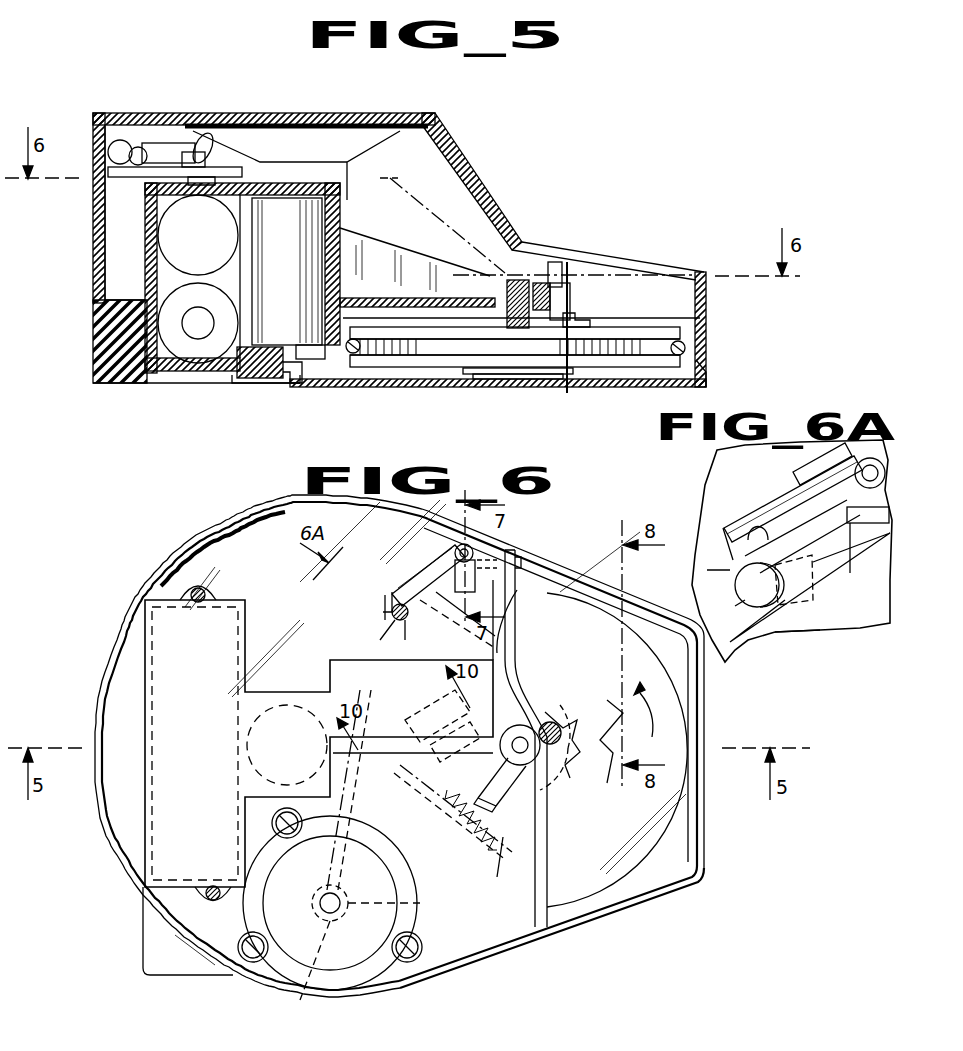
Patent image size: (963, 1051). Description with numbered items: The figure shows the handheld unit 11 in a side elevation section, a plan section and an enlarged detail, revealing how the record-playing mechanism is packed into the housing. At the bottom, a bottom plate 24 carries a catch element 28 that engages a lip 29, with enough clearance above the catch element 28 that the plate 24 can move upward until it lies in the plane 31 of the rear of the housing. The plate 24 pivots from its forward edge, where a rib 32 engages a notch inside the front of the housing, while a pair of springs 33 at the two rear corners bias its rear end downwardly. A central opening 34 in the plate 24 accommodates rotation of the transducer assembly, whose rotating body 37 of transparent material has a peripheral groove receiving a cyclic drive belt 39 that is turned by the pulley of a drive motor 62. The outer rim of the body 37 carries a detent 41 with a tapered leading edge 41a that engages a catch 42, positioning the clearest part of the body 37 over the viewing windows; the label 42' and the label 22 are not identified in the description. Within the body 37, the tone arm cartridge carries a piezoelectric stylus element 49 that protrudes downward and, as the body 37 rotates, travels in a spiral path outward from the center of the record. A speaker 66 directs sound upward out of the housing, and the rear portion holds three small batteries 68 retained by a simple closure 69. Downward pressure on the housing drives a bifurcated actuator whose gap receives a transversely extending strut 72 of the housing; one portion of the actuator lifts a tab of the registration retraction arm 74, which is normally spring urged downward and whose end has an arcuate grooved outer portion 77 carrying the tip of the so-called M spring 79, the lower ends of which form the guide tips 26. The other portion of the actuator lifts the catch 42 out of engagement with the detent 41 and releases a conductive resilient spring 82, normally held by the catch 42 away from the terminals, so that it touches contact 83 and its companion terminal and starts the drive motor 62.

In FIG. 6, the handheld unit 11 is at (136, 572).
In FIG. 6, the circular window 22 is at (613, 700).
In FIG. 5, the bottom plate 24 is at (353, 389).
In FIG. 5, the guide tips 26 is at (568, 392).
In FIG. 5, the catch element 28 is at (287, 348).
In FIG. 5, the lip 29 is at (287, 376).
In FIG. 5, the plane of the rear of housing 31 is at (247, 384).
In FIG. 5, the rib 32 is at (698, 368).
In FIG. 5, the springs 33 is at (315, 384).
In FIG. 5, the central opening 34 is at (470, 388).
In FIG. 6, the rotating body 37 is at (608, 884).
In FIG. 6A, the rotating body 37 is at (868, 618).
In FIG. 6, the cyclic drive belt 39 is at (380, 922).
In FIG. 6, the detent 41 is at (415, 617).
In FIG. 6A, the detent 41 is at (775, 603).
In FIG. 6A, the tapered leading edge 41a is at (722, 640).
In FIG. 6, the catch 42 is at (400, 620).
In FIG. 6A, the catch 42 is at (710, 560).
In FIG. 6A, the spring alternate position 42' is at (820, 580).
In FIG. 5, the piezoelectric stylus element 49 is at (550, 376).
In FIG. 6, the drive motor 62 is at (301, 894).
In FIG. 5, the speaker 66 is at (310, 160).
In FIG. 5, the batteries 68 is at (178, 308).
In FIG. 6, the batteries 68 is at (246, 740).
In FIG. 5, the closure 69 is at (181, 384).
In FIG. 6, the strut 72 is at (517, 592).
In FIG. 6, the registration retraction arm 74 is at (498, 650).
In FIG. 6, the arcuate grooved outer portion 77 is at (553, 722).
In FIG. 5, the M spring 79 is at (637, 300).
In FIG. 6, the M spring 79 is at (560, 778).
In FIG. 6, the conductive resilient spring 82 is at (425, 590).
In FIG. 6A, the conductive resilient spring 82 is at (723, 528).
In FIG. 6, the contact 83 is at (405, 600).
In FIG. 6A, the contact 83 is at (772, 517).